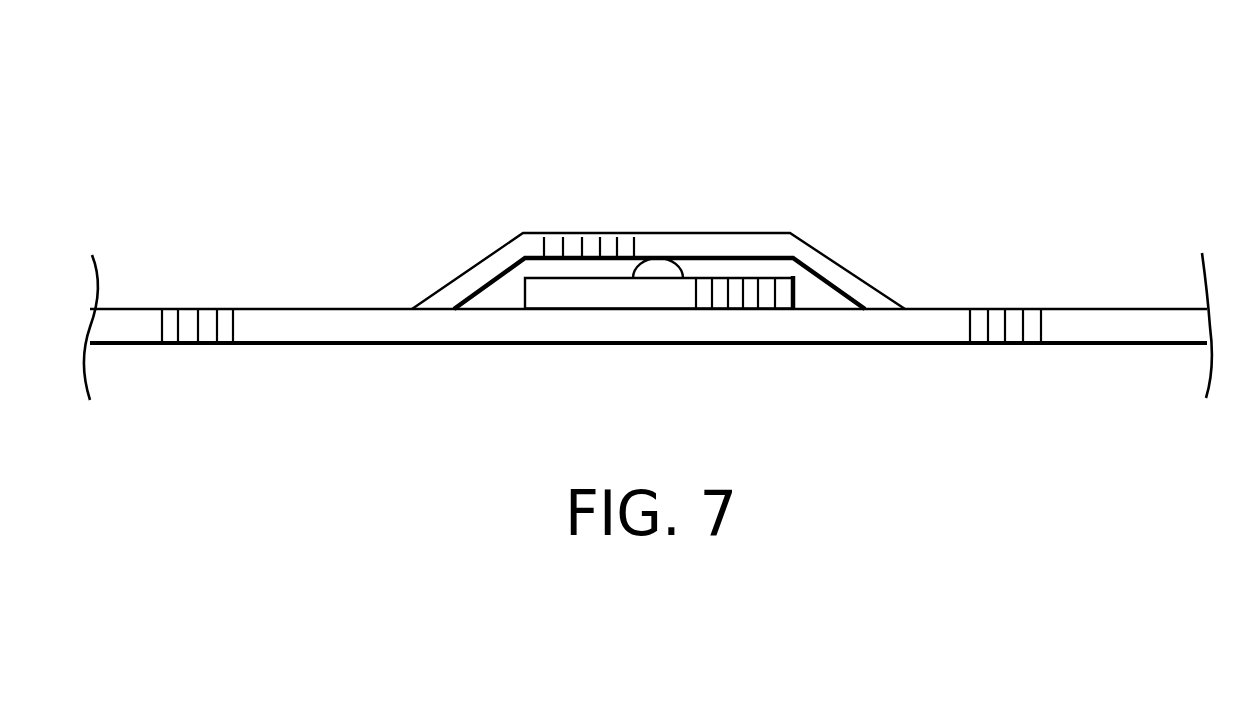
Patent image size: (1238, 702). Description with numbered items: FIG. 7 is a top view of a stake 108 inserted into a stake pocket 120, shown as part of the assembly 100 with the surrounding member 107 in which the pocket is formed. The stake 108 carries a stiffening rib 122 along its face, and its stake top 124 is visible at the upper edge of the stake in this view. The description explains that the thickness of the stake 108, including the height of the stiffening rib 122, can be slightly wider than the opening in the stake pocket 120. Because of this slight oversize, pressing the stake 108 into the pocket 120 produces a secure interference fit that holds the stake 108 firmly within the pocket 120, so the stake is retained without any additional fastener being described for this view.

The semiconductor package 100 is at (648, 251).
The substrate 107 is at (1133, 325).
The stake 108 is at (793, 300).
The stake pocket 120 is at (498, 262).
The stiffening rib 122 is at (662, 270).
The stake top 124 is at (540, 302).